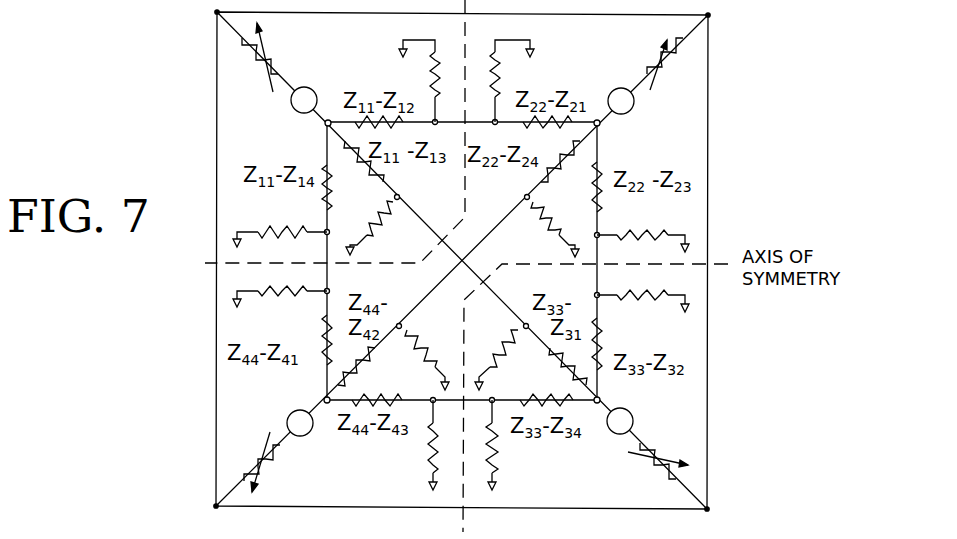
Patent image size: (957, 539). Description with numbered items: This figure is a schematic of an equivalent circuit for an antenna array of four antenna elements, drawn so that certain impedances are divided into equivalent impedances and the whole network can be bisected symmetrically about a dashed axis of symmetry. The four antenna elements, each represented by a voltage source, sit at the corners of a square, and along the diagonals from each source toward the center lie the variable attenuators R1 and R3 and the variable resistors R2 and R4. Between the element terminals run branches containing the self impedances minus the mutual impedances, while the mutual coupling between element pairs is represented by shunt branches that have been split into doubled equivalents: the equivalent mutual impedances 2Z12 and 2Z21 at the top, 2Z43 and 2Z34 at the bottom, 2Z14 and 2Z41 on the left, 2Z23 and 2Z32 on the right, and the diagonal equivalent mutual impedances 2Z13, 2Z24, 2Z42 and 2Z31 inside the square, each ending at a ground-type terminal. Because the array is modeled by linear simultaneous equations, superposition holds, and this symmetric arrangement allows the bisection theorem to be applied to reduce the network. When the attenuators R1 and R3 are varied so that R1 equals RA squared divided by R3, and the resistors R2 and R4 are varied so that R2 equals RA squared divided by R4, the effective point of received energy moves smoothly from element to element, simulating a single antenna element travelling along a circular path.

The attenuator R1 is at (269, 57).
The resistor R2 is at (650, 62).
The attenuator R3 is at (654, 469).
The resistor R4 is at (273, 463).
The equivalent mutual impedance 2Z12 is at (408, 81).
The equivalent mutual impedance 2Z21 is at (526, 81).
The equivalent mutual impedance 2Z43 is at (398, 445).
The equivalent mutual impedance 2Z34 is at (520, 445).
The equivalent mutual impedance 2Z14 is at (280, 220).
The equivalent mutual impedance 2Z41 is at (280, 309).
The equivalent mutual impedance 2Z23 is at (643, 225).
The equivalent mutual impedance 2Z32 is at (643, 314).
The equivalent mutual impedance 2Z13 is at (383, 231).
The equivalent mutual impedance 2Z24 is at (538, 231).
The equivalent mutual impedance 2Z42 is at (431, 351).
The equivalent mutual impedance 2Z31 is at (494, 351).